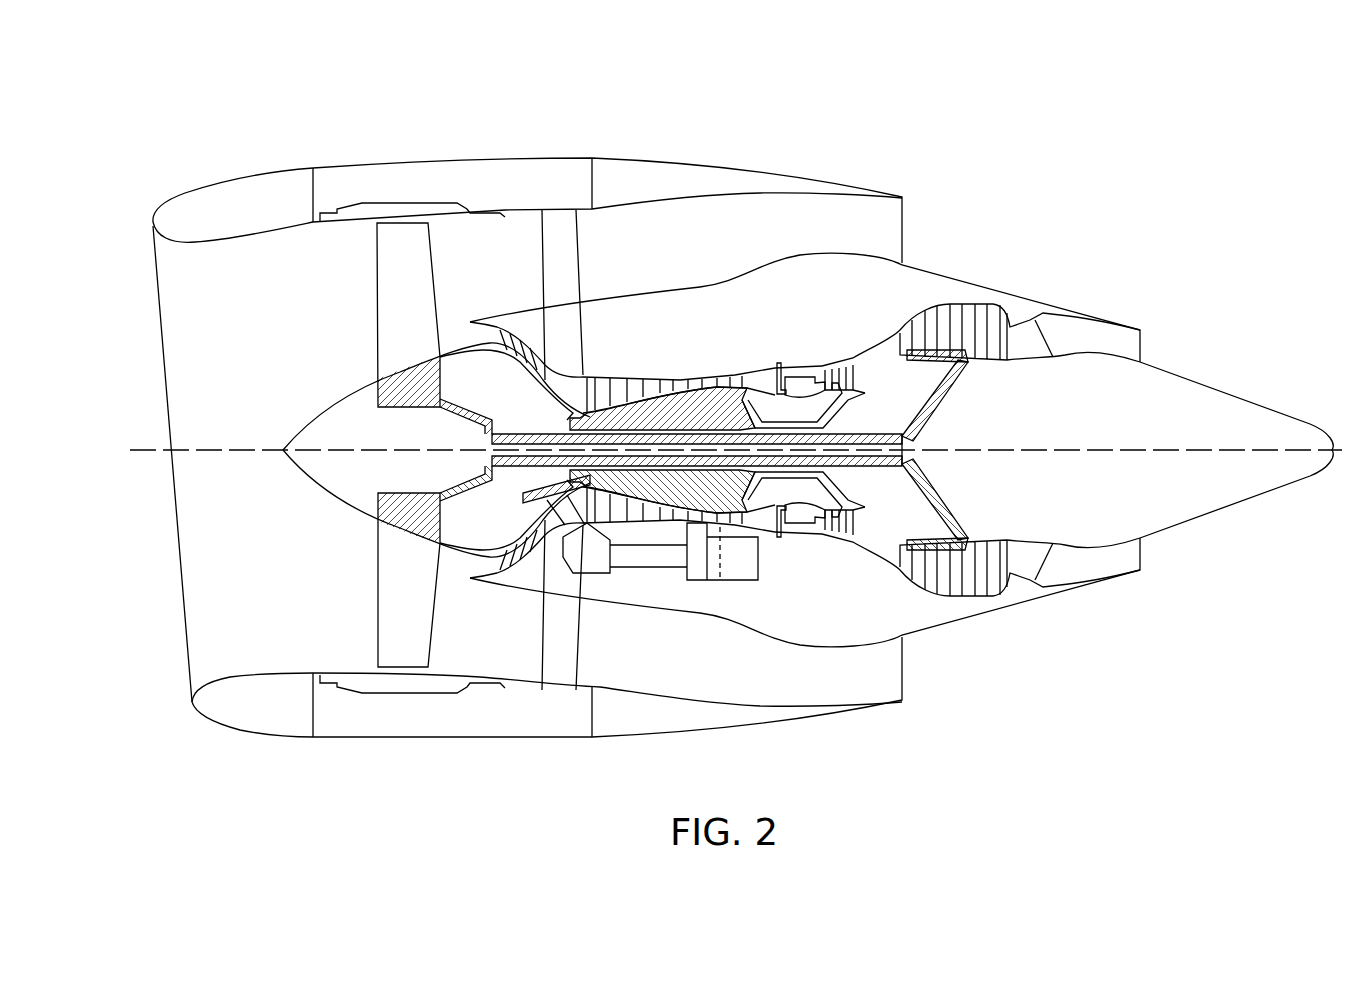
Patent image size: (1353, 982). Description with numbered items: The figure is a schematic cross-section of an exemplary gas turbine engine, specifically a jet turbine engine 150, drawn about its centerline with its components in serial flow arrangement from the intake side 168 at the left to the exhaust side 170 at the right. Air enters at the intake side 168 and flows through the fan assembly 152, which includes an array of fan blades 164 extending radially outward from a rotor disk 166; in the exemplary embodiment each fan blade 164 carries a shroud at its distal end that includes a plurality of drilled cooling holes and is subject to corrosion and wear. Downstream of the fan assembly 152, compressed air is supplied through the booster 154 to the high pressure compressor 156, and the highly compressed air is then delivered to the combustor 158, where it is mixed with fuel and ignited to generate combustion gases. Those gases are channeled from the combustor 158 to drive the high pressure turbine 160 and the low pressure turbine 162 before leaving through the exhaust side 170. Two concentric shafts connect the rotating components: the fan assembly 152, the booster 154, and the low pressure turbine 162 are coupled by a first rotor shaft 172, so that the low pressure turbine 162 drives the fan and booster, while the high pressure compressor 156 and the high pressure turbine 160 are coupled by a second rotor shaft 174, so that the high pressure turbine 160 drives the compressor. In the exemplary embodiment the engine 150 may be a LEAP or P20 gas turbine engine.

The jet turbine engine 150 is at (226, 116).
The fan assembly 152 is at (402, 619).
The booster 154 is at (522, 333).
The high pressure compressor 156 is at (618, 383).
The combustor 158 is at (792, 372).
The high pressure turbine 160 is at (834, 540).
The low pressure turbine 162 is at (838, 366).
The fan blade 164 is at (386, 297).
The rotor disk 166 is at (400, 520).
The intake side 168 is at (177, 267).
The exhaust side 170 is at (941, 208).
The first rotor shaft 172 is at (864, 476).
The second rotor shaft 174 is at (848, 415).